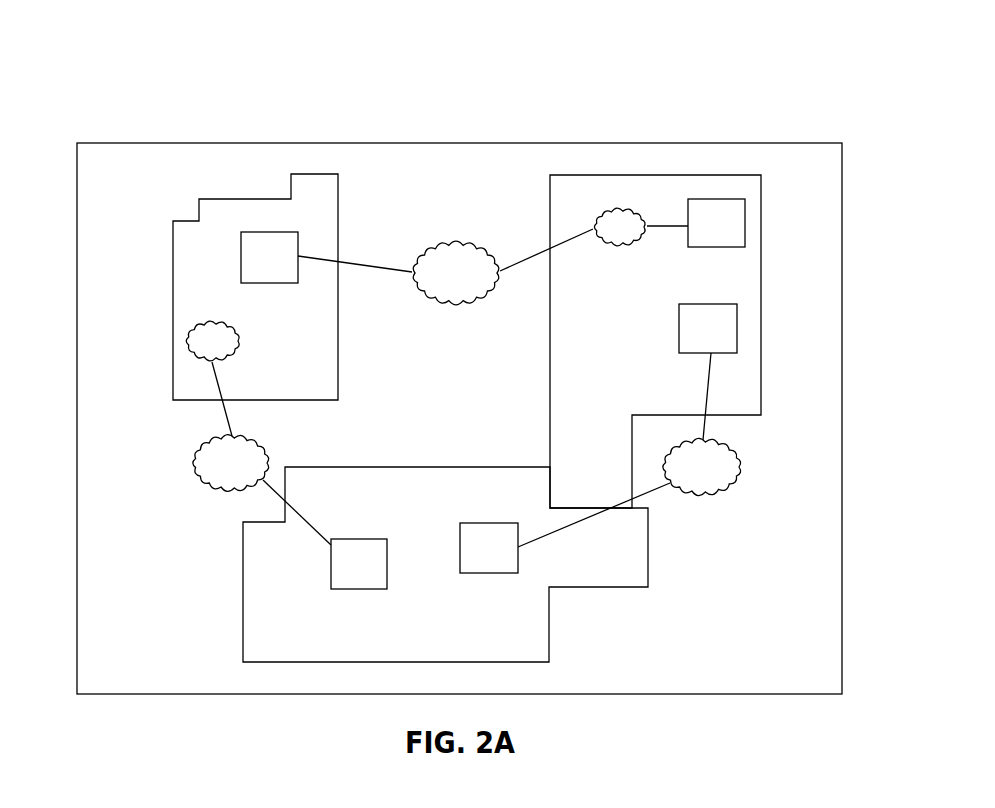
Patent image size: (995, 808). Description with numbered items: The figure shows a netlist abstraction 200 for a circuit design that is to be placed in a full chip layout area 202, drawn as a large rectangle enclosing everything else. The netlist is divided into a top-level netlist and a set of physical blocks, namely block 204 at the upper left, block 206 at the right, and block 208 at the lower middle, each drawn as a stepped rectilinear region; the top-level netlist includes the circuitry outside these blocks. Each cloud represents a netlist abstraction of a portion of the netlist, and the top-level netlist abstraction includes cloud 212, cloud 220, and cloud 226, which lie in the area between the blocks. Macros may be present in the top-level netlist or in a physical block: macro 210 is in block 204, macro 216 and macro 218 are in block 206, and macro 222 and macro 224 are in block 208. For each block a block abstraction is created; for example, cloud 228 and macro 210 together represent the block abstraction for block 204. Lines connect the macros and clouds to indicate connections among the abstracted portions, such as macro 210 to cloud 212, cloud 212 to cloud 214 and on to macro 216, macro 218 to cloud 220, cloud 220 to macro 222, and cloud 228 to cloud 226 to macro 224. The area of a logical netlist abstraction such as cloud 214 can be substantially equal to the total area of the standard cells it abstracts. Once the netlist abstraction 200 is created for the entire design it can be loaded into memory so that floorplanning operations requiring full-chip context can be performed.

The netlist abstraction 200 is at (165, 93).
The full chip layout area 202 is at (727, 143).
The block 204 is at (173, 222).
The block 206 is at (550, 175).
The block 208 is at (243, 662).
The macro 210 is at (269, 257).
The cloud 212 is at (456, 273).
The cloud 214 is at (619, 227).
The macro 216 is at (716, 223).
The macro 218 is at (708, 328).
The cloud 220 is at (702, 466).
The macro 222 is at (489, 548).
The macro 224 is at (359, 564).
The cloud 226 is at (231, 463).
The cloud 228 is at (212, 341).